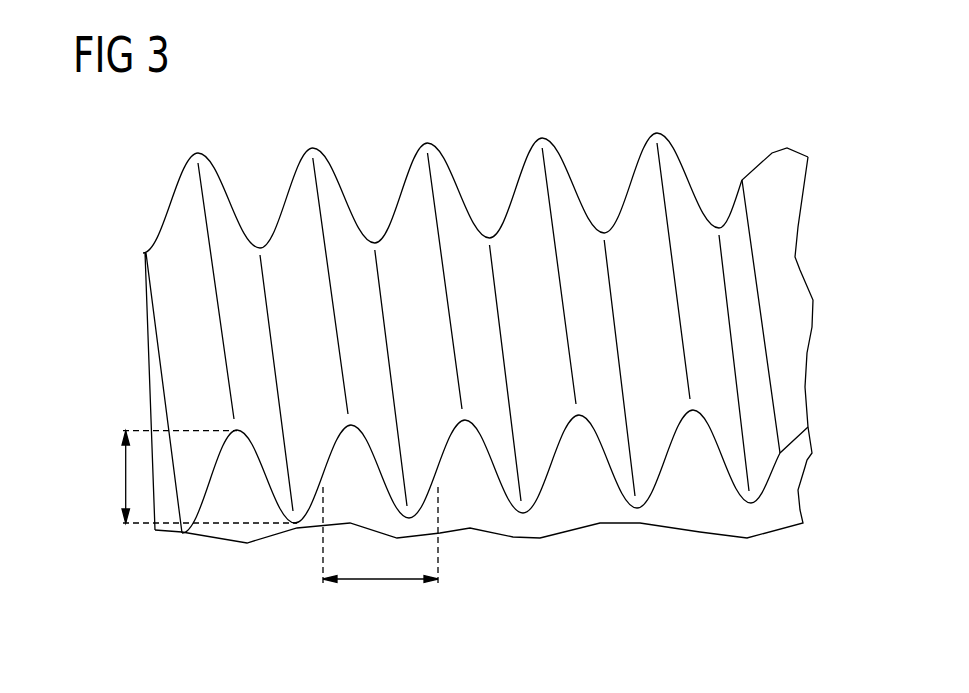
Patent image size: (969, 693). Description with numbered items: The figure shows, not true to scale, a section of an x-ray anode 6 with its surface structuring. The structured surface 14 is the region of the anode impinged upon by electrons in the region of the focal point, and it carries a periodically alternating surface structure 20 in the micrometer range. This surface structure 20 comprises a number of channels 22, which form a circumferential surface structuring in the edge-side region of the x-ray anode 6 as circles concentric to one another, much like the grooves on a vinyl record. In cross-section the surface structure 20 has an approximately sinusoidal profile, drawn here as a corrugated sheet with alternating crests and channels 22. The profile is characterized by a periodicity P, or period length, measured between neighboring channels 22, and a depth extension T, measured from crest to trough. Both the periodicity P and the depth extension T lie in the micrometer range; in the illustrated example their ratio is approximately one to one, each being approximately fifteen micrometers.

The structured surface 14 is at (489, 110).
The periodically alternating surface structure 20 is at (597, 167).
The channels 22 is at (530, 495).
The x-ray anode 6 is at (792, 473).
The depth extension T is at (125, 477).
The periodicity P is at (382, 580).